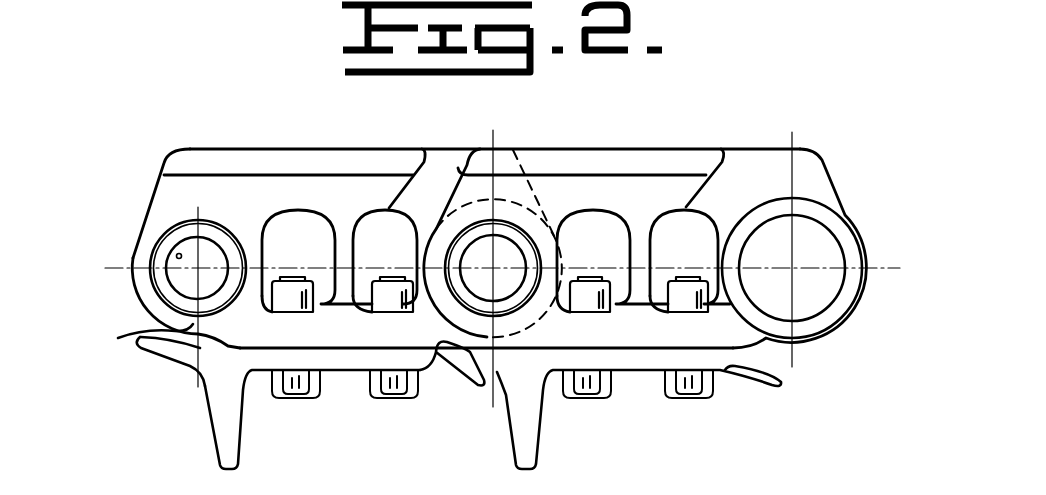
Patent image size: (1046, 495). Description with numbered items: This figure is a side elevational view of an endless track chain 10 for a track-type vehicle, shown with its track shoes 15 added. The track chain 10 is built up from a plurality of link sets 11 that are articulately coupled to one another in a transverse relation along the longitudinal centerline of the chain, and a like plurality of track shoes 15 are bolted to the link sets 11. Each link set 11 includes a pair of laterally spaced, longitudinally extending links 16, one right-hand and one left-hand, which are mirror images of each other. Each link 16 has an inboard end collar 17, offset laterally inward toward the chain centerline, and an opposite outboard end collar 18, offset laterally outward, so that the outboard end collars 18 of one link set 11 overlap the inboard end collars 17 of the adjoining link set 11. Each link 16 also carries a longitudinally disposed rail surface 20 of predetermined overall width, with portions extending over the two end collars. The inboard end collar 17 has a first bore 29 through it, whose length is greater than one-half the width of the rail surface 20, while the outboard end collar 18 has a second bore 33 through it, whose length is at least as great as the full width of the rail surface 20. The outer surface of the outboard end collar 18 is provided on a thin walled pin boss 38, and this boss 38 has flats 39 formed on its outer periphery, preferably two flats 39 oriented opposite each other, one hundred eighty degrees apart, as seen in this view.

The endless track chain 10 is at (277, 50).
The link set 11 is at (148, 162).
The track shoe 15 is at (228, 432).
The link 16 is at (158, 207).
The inboard end collar 17 is at (848, 295).
The outboard end collar 18 is at (143, 283).
The rail surface 20 is at (569, 148).
The first bore 29 is at (819, 316).
The second bore 33 is at (176, 253).
The pin boss 38 is at (220, 308).
The flat 39 is at (205, 223).